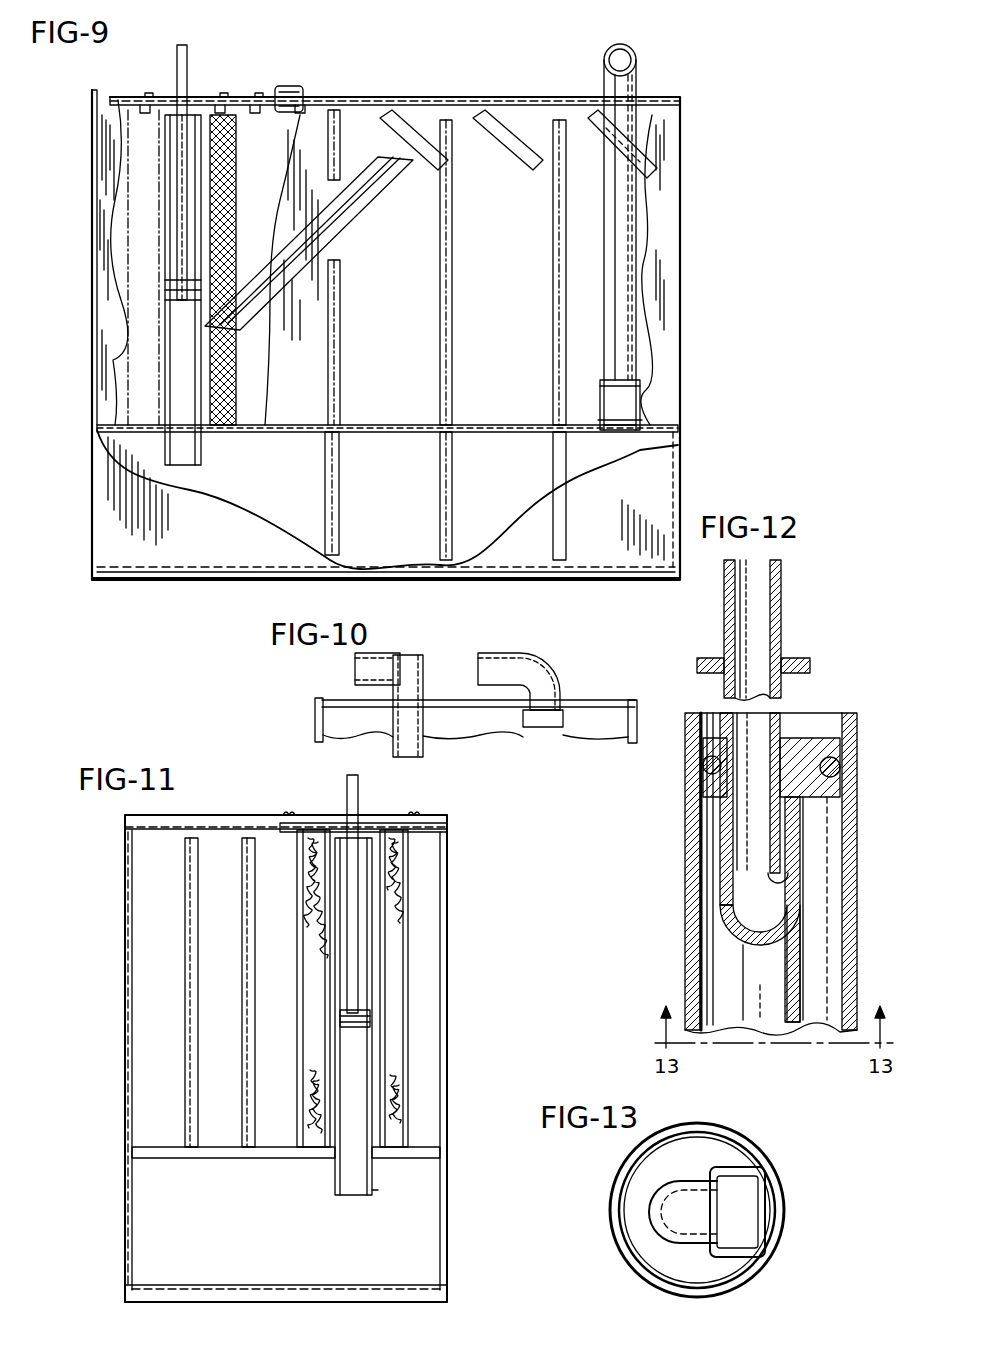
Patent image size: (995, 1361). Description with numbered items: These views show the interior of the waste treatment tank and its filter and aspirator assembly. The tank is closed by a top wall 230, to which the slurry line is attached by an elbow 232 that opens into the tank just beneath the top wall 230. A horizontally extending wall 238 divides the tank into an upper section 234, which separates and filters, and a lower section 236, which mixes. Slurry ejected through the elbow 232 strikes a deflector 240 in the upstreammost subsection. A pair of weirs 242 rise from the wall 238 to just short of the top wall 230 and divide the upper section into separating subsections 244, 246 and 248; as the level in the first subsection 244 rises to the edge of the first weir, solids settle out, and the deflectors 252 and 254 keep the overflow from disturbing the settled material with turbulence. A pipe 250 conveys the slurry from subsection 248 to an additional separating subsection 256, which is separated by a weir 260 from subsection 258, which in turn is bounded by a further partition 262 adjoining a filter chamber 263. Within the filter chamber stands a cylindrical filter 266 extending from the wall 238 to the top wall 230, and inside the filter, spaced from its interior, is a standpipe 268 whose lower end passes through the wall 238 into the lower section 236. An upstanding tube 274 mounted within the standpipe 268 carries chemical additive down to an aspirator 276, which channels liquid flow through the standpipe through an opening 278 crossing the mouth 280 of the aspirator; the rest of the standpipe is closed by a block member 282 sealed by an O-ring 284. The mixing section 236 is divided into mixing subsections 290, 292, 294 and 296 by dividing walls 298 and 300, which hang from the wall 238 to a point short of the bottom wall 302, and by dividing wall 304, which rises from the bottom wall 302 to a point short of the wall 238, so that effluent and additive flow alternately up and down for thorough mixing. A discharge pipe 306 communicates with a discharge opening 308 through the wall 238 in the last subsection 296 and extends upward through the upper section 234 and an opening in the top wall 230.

In FIG. 9, the top wall 230 is at (421, 96).
In FIG. 11, the top wall 230 is at (215, 818).
In FIG. 10, the elbow 232 is at (552, 672).
In FIG. 9, the upper section 234 is at (672, 117).
In FIG. 9, the lower section 236 is at (651, 579).
In FIG. 11, the lower section 236 is at (297, 1246).
In FIG. 9, the horizontally extending wall 238 is at (652, 438).
In FIG. 11, the horizontally extending wall 238 is at (432, 1160).
In FIG. 9, the deflector 240 is at (650, 160).
In FIG. 9, the weirs 242 is at (556, 280).
In FIG. 9, the first separating subsection 244 is at (652, 222).
In FIG. 9, the separating subsection 246 is at (527, 356).
In FIG. 9, the separating subsection 248 is at (407, 350).
In FIG. 9, the pipe 250 is at (353, 207).
In FIG. 9, the deflector 252 is at (510, 116).
In FIG. 9, the deflector 254 is at (382, 112).
In FIG. 11, the additional separating subsection 256 is at (182, 976).
In FIG. 11, the subsection 258 is at (205, 1055).
In FIG. 11, the weir 260 is at (185, 870).
In FIG. 11, the partition 262 is at (248, 838).
In FIG. 11, the filter chamber 263 is at (428, 940).
In FIG. 11, the cylindrical filter 266 is at (398, 856).
In FIG. 11, the standpipe 268 is at (375, 1192).
In FIG. 9, the upstanding tube 274 is at (184, 60).
In FIG. 12, the upstanding tube 274 is at (728, 716).
In FIG. 11, the upstanding tube 274 is at (348, 790).
In FIG. 12, the aspirator 276 is at (670, 884).
In FIG. 11, the aspirator 276 is at (356, 1040).
In FIG. 13, the opening 278 is at (748, 1208).
In FIG. 12, the mouth 280 is at (745, 898).
In FIG. 12, the block member 282 is at (825, 740).
In FIG. 13, the block member 282 is at (730, 1160).
In FIG. 12, the O-ring 284 is at (706, 768).
In FIG. 9, the mixing subsection 290 is at (267, 501).
In FIG. 9, the mixing subsection 292 is at (407, 491).
In FIG. 9, the mixing subsection 294 is at (522, 511).
In FIG. 9, the last mixing subsection 296 is at (580, 488).
In FIG. 9, the dividing wall 298 is at (327, 456).
In FIG. 9, the dividing wall 300 is at (553, 460).
In FIG. 9, the bottom wall 302 is at (549, 570).
In FIG. 9, the dividing wall 304 is at (420, 566).
In FIG. 9, the discharge pipe 306 is at (628, 287).
In FIG. 10, the discharge pipe 306 is at (440, 640).
In FIG. 9, the discharge opening 308 is at (620, 432).